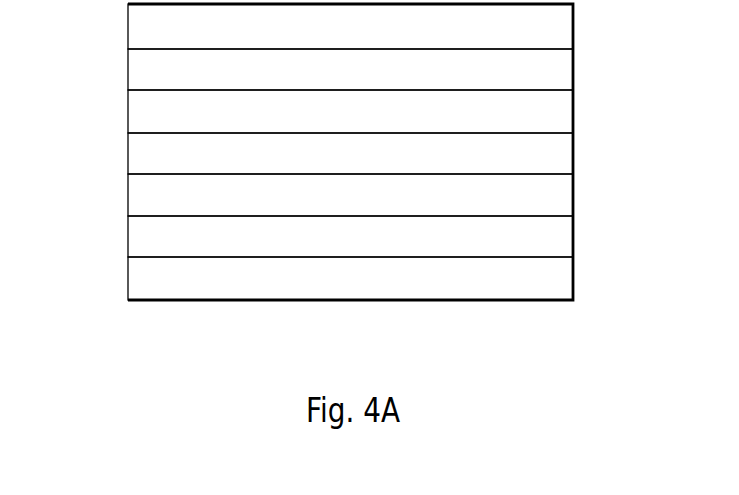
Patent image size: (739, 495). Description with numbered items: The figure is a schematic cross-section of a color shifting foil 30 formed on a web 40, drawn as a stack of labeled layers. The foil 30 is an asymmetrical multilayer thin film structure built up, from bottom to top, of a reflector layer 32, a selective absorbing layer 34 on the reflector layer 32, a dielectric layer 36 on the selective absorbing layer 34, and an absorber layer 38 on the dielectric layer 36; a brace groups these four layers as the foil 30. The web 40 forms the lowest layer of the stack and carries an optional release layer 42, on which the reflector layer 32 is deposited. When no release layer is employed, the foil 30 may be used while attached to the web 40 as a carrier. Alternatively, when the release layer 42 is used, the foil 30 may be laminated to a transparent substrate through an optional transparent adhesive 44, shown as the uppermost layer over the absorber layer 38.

The color shifting foil 30 is at (110, 48).
The reflector layer 32 is at (563, 200).
The selective absorbing layer 34 is at (563, 158).
The dielectric layer 36 is at (563, 116).
The absorber layer 38 is at (563, 74).
The web 40 is at (563, 283).
The release layer 42 is at (563, 242).
The transparent adhesive 44 is at (563, 32).